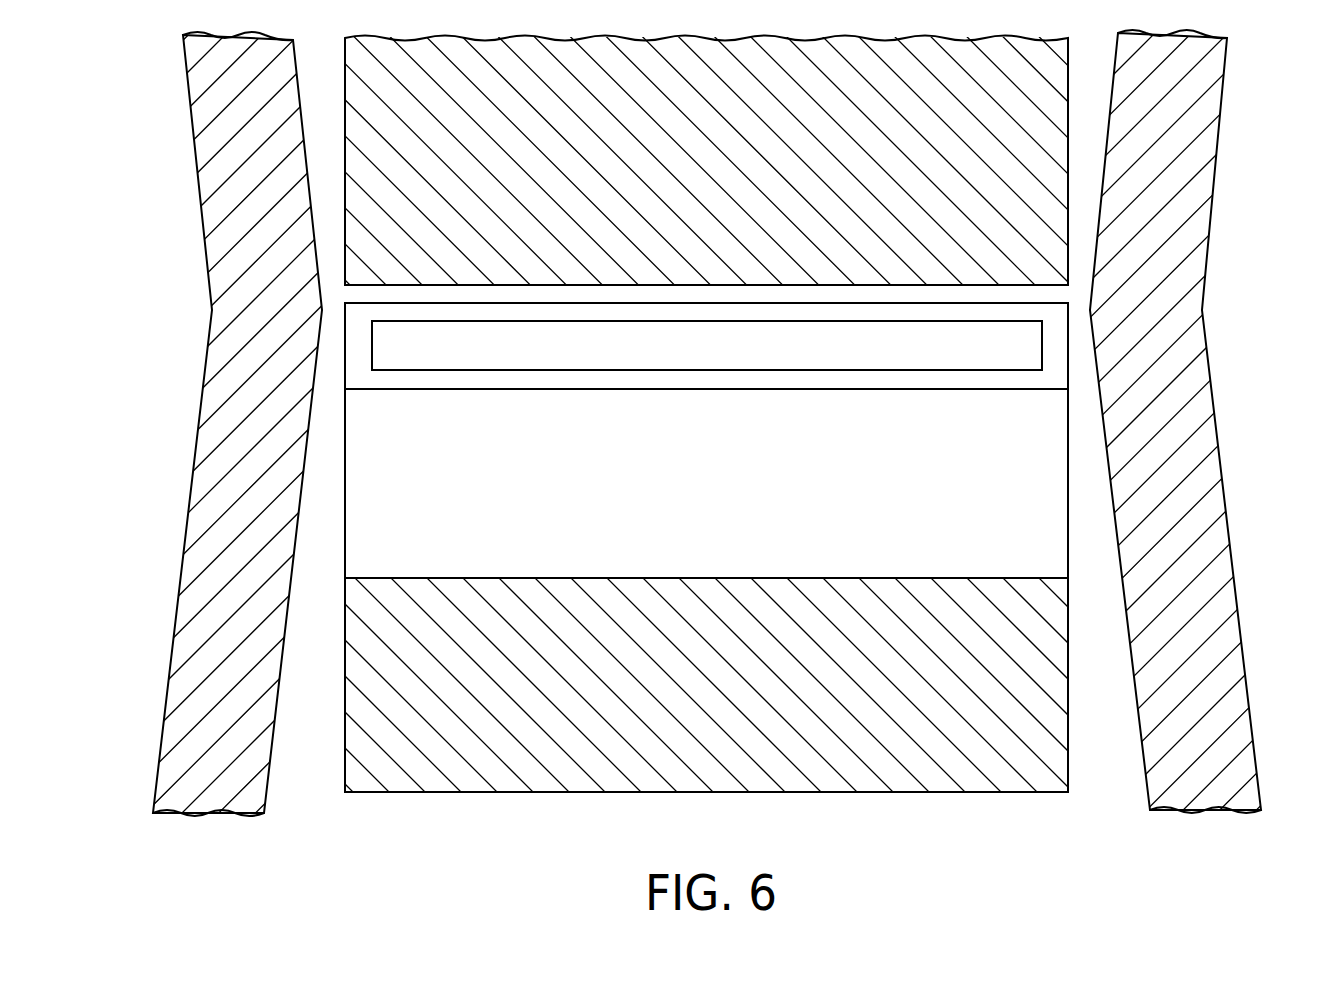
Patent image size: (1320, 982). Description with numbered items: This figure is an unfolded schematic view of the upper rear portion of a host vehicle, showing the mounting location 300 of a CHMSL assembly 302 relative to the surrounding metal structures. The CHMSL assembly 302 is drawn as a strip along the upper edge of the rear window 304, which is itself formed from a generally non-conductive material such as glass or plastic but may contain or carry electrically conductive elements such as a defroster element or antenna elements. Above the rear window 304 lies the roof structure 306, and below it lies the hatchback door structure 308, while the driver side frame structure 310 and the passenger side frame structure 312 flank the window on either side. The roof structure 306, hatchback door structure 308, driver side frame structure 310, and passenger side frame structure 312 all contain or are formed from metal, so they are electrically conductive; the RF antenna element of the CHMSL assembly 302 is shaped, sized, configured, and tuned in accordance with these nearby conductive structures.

The mounting location 300 is at (835, 404).
The CHMSL assembly 302 is at (503, 360).
The rear window 304 is at (765, 520).
The roof structure 306 is at (712, 190).
The hatchback door structure 308 is at (755, 696).
The driver side frame structure 310 is at (205, 365).
The passenger side frame structure 312 is at (1208, 362).